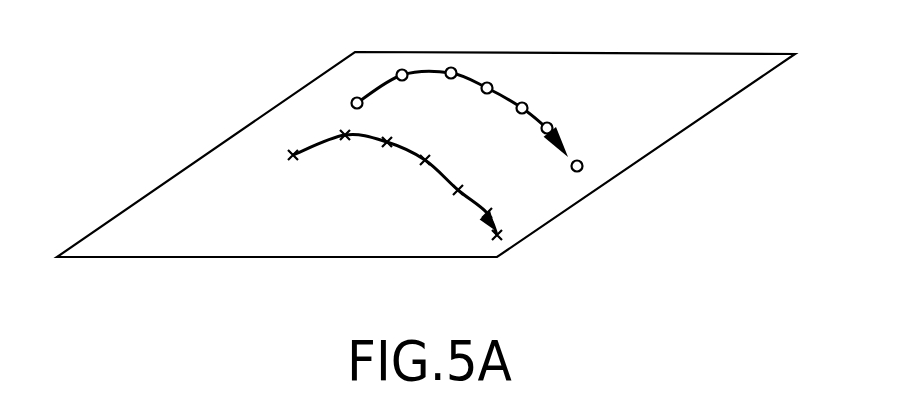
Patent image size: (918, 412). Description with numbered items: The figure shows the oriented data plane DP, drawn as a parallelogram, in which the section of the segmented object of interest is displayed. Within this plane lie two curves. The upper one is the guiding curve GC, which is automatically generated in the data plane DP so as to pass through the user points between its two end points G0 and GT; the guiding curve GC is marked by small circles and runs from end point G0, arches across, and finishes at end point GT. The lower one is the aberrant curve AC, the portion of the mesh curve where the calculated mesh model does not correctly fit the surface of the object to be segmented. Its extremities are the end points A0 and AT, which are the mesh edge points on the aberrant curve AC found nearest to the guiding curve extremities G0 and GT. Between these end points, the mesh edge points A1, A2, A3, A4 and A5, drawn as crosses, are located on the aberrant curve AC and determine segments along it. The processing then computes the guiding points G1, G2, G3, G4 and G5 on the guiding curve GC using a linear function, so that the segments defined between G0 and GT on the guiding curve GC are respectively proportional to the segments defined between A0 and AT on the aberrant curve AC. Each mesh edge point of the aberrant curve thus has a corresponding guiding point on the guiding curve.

The data plane DP is at (720, 73).
The guiding curve GC is at (573, 142).
The end point of the guiding curve G0 is at (352, 100).
The guiding point G1 is at (402, 68).
The guiding point G2 is at (450, 66).
The guiding point G3 is at (487, 81).
The guiding point G4 is at (522, 101).
The guiding point G5 is at (548, 121).
The end point of the guiding curve GT is at (583, 167).
The aberrant curve AC is at (310, 152).
The end point of the aberrant curve A0 is at (288, 142).
The mesh edge point A1 is at (335, 143).
The mesh edge point A2 is at (378, 148).
The mesh edge point A3 is at (417, 167).
The mesh edge point A4 is at (453, 192).
The mesh edge point A5 is at (480, 218).
The end point of the aberrant curve AT is at (503, 236).